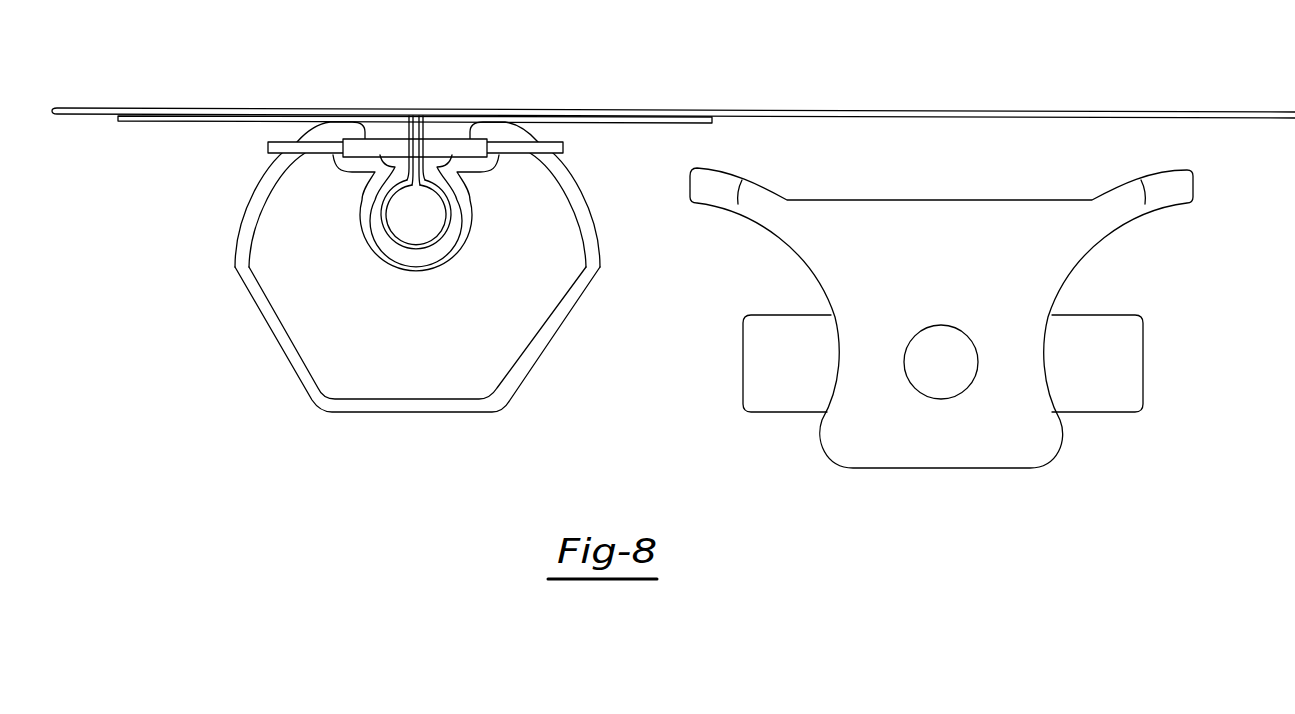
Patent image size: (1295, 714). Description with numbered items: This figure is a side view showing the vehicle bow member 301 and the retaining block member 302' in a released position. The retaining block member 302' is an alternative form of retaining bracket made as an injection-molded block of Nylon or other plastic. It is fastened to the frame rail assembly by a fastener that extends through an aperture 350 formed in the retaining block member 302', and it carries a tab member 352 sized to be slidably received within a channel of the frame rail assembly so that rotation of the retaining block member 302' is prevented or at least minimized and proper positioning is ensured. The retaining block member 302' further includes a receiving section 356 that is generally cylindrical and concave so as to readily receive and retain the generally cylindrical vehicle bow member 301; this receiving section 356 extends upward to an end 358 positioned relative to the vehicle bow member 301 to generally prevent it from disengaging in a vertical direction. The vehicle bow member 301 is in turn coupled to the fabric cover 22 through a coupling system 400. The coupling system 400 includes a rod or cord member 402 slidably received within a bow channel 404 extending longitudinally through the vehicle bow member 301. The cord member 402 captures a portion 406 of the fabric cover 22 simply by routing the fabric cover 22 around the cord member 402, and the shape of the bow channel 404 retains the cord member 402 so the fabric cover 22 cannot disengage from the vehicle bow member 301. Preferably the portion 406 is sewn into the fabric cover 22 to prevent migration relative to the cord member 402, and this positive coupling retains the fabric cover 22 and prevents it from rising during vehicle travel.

The fabric cover 22 is at (763, 110).
The vehicle bow member 301 is at (266, 340).
The coupling system 400 is at (415, 239).
The cord member 402 is at (413, 215).
The bow channel 404 is at (420, 250).
The portion of fabric cover 406 is at (386, 209).
The retaining block member 302' is at (920, 353).
The aperture 350 is at (973, 338).
The tab member 352 is at (1145, 363).
The receiving section 356 is at (720, 366).
The end 358 is at (692, 183).